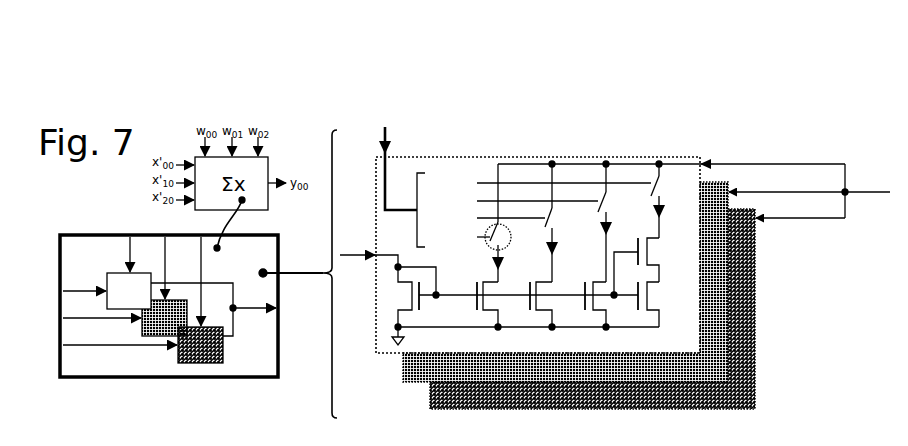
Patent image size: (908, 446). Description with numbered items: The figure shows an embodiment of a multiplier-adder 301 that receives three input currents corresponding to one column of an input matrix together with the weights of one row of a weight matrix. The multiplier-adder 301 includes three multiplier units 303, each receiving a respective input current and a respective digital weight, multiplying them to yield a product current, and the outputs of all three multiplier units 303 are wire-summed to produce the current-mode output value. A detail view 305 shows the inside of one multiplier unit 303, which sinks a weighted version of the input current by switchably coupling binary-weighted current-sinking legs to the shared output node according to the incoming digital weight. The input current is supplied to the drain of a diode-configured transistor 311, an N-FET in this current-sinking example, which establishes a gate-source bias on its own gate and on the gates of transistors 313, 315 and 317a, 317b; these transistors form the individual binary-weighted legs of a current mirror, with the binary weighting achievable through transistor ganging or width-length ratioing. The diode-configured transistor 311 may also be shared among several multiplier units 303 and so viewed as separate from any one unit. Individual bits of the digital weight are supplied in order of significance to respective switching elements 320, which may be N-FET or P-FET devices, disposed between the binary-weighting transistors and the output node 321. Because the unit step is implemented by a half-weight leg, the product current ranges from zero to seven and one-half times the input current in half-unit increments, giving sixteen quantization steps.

The multiplier-adder 301 is at (169, 306).
The multiplier unit 303 is at (107, 273).
The detail view 305 is at (298, 274).
The diode-configured transistor 311 is at (401, 297).
The transistor 313 is at (505, 283).
The transistor 315 is at (557, 283).
The transistor 317a is at (661, 260).
The transistor 317b is at (661, 304).
The switching element 320 is at (494, 244).
The output node 321 is at (678, 170).